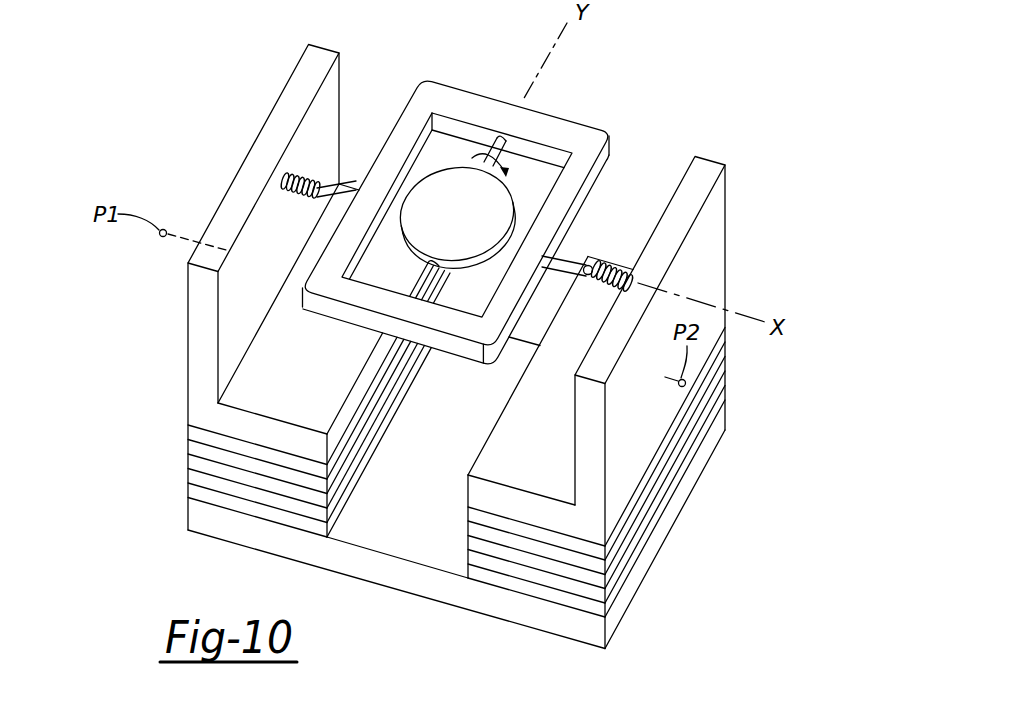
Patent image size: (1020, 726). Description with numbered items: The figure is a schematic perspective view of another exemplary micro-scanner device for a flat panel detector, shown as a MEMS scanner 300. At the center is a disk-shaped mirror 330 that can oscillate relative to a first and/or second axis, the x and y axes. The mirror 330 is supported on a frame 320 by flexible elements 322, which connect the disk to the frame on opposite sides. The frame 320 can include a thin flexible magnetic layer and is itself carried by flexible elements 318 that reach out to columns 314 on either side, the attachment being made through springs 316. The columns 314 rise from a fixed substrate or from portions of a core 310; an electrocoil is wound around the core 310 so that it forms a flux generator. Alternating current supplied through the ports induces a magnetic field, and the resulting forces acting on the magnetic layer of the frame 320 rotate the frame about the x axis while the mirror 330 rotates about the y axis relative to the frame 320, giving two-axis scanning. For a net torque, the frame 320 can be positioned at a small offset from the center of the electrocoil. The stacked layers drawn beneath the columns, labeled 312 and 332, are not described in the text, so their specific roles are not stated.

The MEMS scanner 300 is at (716, 92).
The core 310 is at (498, 607).
The piezoelectric layer stack 312 is at (212, 472).
The columns 314 is at (188, 350).
The springs 316 is at (302, 198).
The flexible elements 318 is at (332, 190).
The frame 320 is at (577, 136).
The flexible elements 322 is at (500, 137).
The disk-shaped mirror 330 is at (463, 188).
The top layer 332 is at (198, 440).